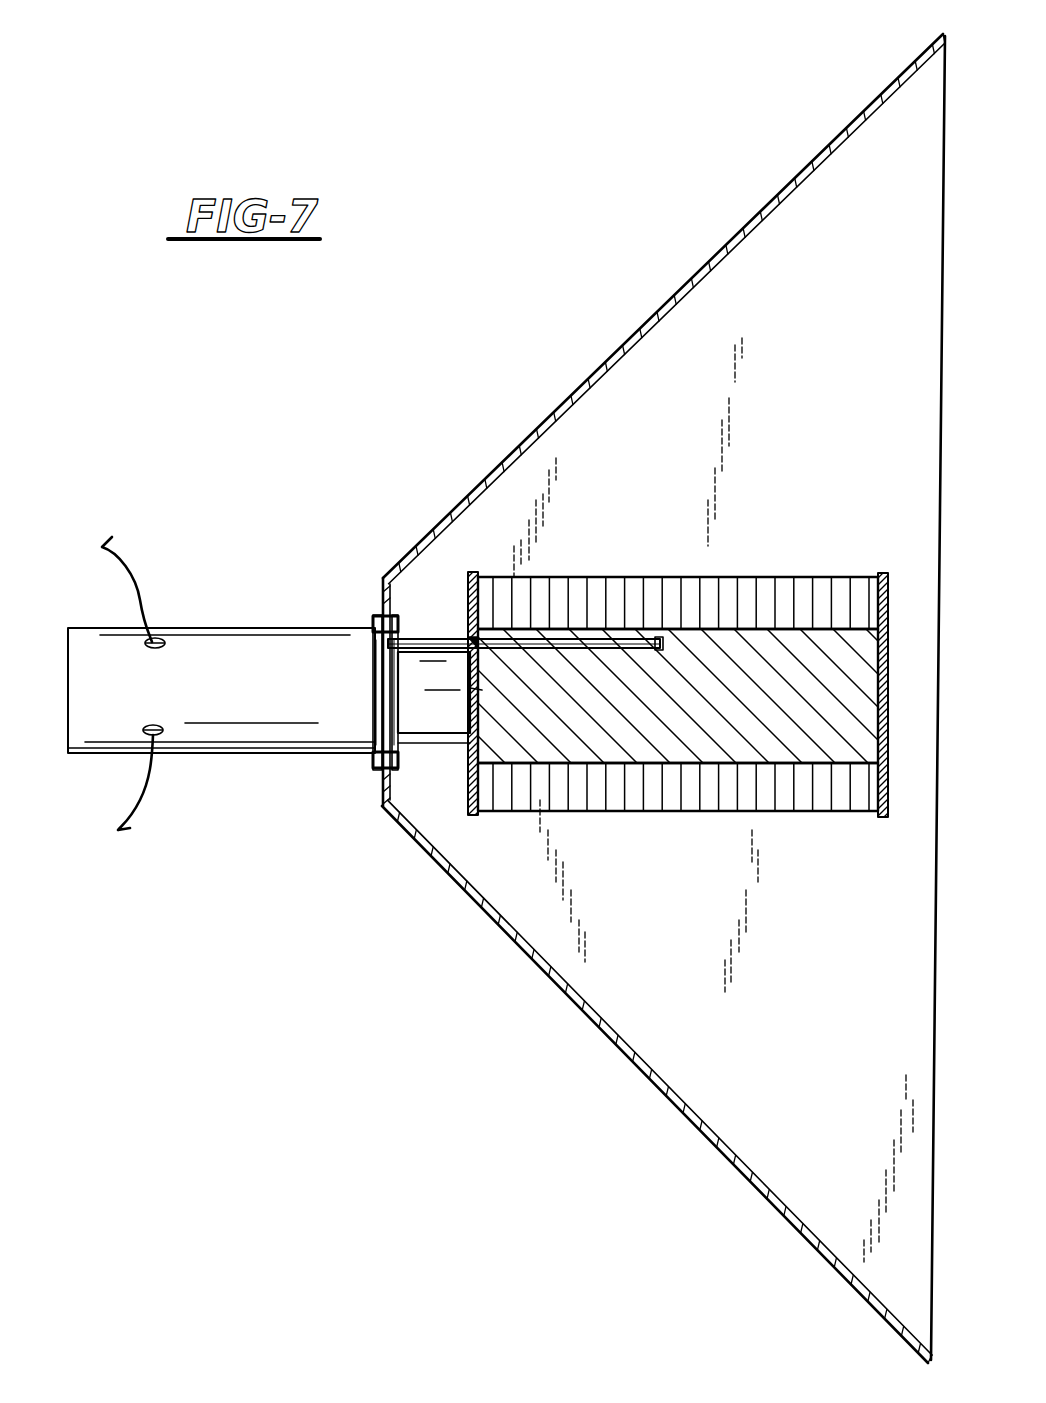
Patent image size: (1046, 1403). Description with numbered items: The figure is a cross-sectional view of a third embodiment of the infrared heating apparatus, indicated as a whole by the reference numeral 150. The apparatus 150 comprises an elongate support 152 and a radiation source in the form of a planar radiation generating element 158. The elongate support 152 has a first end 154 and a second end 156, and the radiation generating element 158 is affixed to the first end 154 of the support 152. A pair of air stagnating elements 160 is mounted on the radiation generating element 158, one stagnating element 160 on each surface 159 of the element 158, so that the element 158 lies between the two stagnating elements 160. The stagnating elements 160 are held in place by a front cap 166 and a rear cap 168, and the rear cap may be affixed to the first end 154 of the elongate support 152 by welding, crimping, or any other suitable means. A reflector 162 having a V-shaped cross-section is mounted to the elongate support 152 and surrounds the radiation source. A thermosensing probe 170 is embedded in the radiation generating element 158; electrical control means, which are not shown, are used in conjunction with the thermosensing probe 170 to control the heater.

The infrared heating apparatus 150 is at (614, 318).
The elongate support 152 is at (432, 735).
The first end 154 is at (478, 688).
The second end 156 is at (275, 650).
The planar radiation generating element 158 is at (836, 750).
The surface 159 is at (757, 625).
The air stagnating elements 160 is at (658, 568).
The reflector 162 is at (741, 228).
The front cap 166 is at (888, 592).
The rear cap 168 is at (465, 795).
The thermosensing probe 170 is at (478, 688).